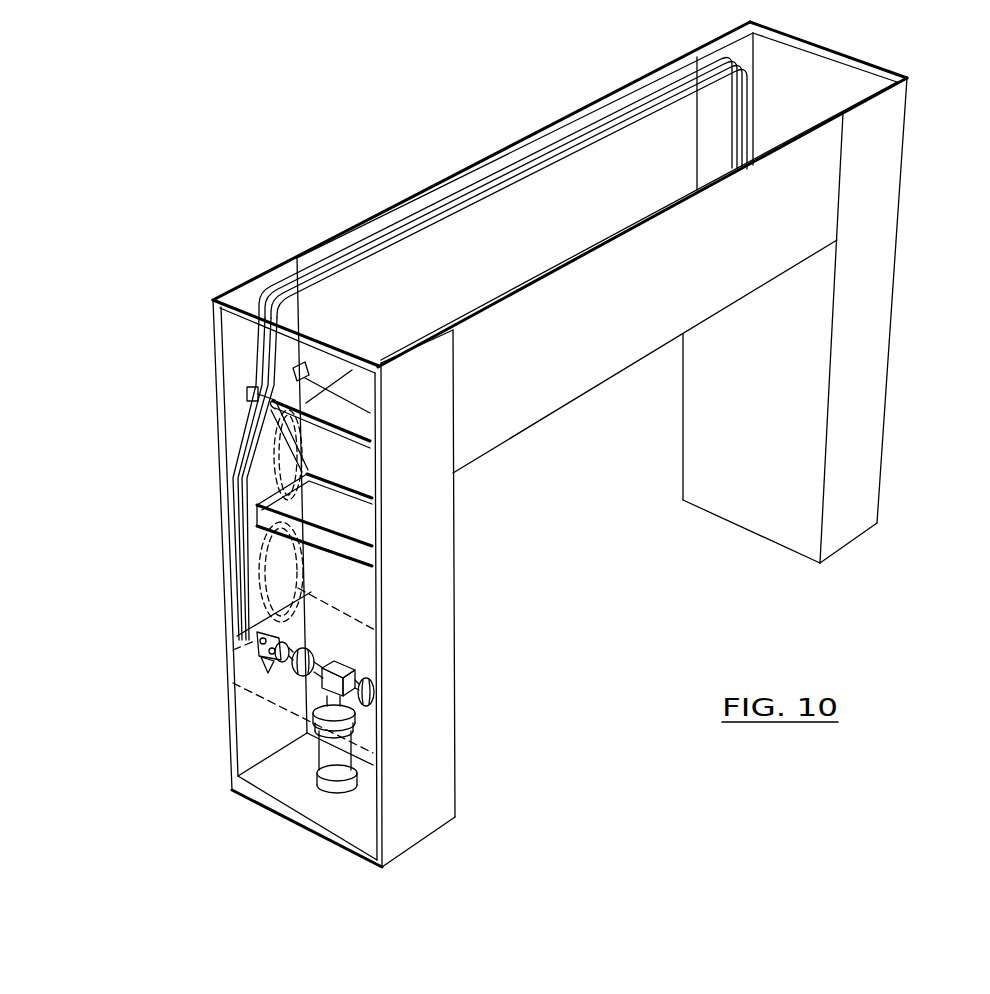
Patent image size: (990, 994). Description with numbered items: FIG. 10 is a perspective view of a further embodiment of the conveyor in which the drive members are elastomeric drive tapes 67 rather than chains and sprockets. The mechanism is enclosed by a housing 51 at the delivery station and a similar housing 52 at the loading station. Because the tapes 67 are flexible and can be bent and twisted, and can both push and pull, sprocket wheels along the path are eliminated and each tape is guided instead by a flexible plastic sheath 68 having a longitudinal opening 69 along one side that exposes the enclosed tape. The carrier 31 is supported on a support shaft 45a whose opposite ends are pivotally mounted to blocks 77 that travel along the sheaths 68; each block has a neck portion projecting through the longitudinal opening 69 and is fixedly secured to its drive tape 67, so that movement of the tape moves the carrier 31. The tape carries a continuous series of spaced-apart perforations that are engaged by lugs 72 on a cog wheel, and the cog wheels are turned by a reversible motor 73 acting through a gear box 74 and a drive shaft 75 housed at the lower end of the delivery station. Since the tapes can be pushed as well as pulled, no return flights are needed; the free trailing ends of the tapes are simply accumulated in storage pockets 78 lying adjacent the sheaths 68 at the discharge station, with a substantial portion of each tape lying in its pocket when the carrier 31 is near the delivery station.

The carrier 31 is at (340, 557).
The support shaft 45a is at (328, 427).
The housing 51 is at (448, 514).
The housing 52 is at (882, 375).
The elastomeric drive tape 67 is at (262, 364).
The flexible plastic sheath 68 is at (374, 260).
The longitudinal opening 69 is at (390, 242).
The lug 72 is at (256, 637).
The reversible motor 73 is at (335, 751).
The gear box 74 is at (350, 672).
The drive shaft 75 is at (283, 660).
The block 77 is at (248, 395).
The storage pocket 78 is at (300, 373).